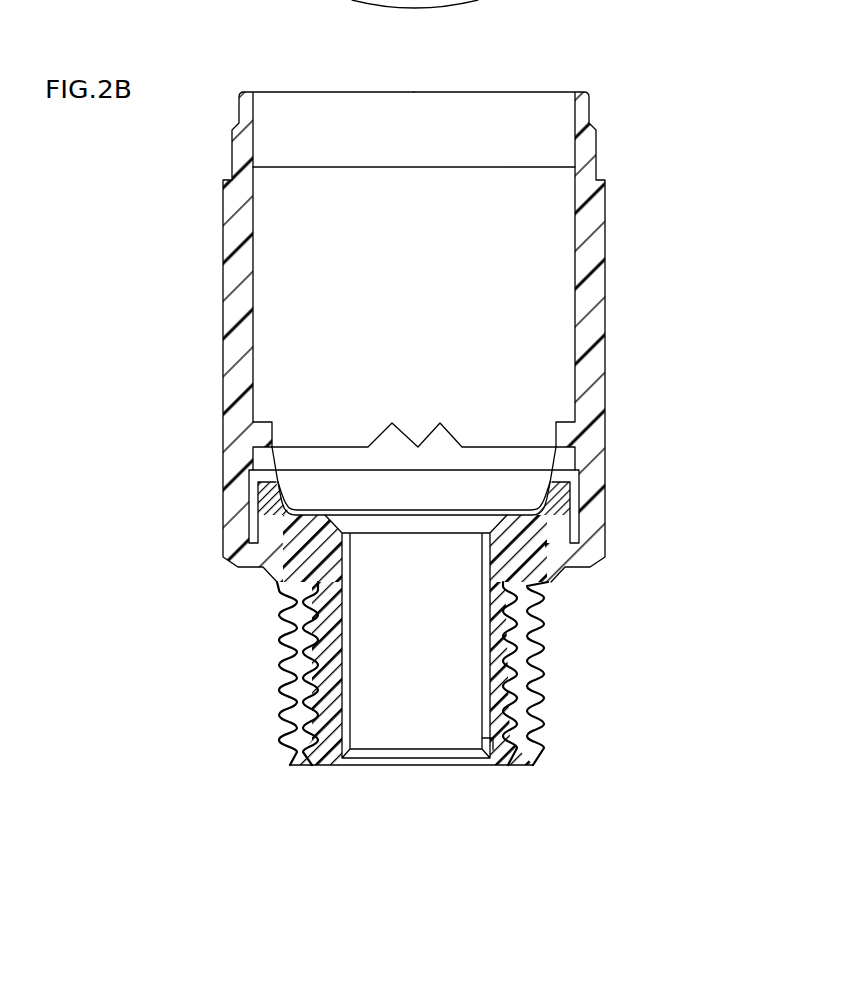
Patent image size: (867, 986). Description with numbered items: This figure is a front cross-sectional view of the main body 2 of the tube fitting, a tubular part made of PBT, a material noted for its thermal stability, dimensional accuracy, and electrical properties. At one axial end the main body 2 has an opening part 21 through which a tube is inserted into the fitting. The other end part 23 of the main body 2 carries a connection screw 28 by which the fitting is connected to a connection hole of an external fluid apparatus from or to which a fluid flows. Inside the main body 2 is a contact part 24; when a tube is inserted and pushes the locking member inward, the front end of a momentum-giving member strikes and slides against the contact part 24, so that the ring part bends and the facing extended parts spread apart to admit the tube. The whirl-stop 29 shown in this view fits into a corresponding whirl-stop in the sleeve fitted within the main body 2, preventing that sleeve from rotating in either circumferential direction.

The main body 2 is at (654, 72).
The opening part 21 is at (461, 69).
The other end part 23 is at (518, 792).
The contact part 24 is at (505, 495).
The connection screw 28 is at (574, 655).
The whirl-stop 29 is at (445, 394).